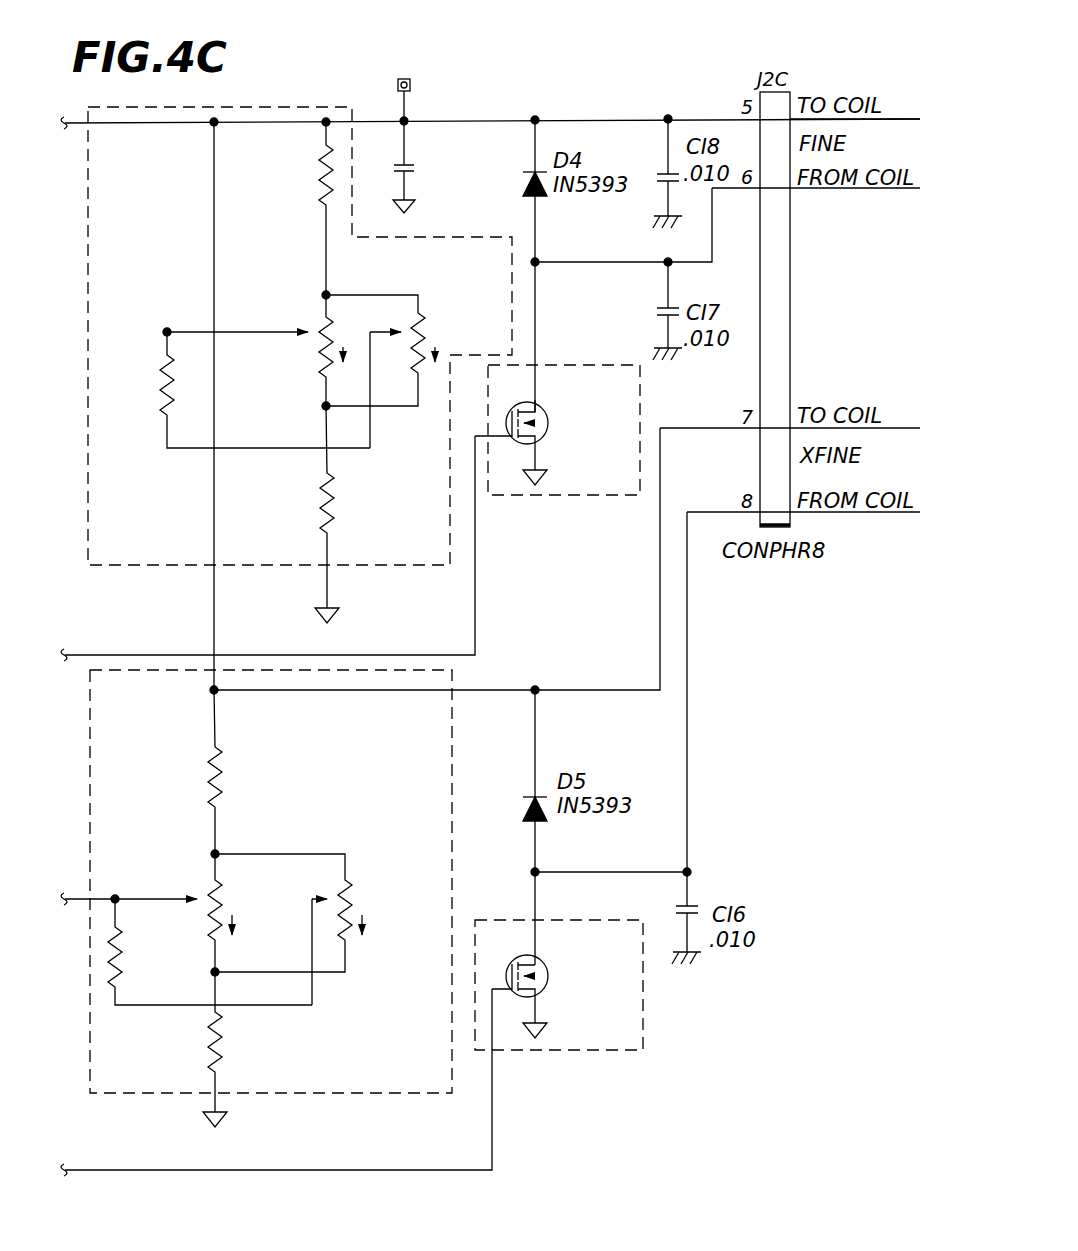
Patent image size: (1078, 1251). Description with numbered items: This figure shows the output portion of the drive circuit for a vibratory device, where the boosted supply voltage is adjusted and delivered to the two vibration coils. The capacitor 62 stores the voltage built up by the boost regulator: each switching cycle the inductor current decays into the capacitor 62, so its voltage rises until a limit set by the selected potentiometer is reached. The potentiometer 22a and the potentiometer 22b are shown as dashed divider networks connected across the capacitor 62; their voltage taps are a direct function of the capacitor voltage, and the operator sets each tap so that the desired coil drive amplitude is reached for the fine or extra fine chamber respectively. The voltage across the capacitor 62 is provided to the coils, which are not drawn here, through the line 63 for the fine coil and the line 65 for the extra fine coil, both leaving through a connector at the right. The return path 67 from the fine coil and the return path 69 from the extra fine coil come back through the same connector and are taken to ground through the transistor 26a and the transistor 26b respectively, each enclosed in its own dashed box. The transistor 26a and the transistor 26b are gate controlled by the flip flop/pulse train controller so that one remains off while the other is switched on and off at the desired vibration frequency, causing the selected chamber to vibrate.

The potentiometer 22a is at (176, 568).
The potentiometer 22b is at (176, 1095).
The transistor switch 26a is at (520, 497).
The transistor switch 26b is at (520, 1052).
The capacitor 62 is at (412, 161).
The line 63 is at (906, 117).
The line 65 is at (906, 427).
The return path 67 is at (905, 190).
The return path 69 is at (905, 513).